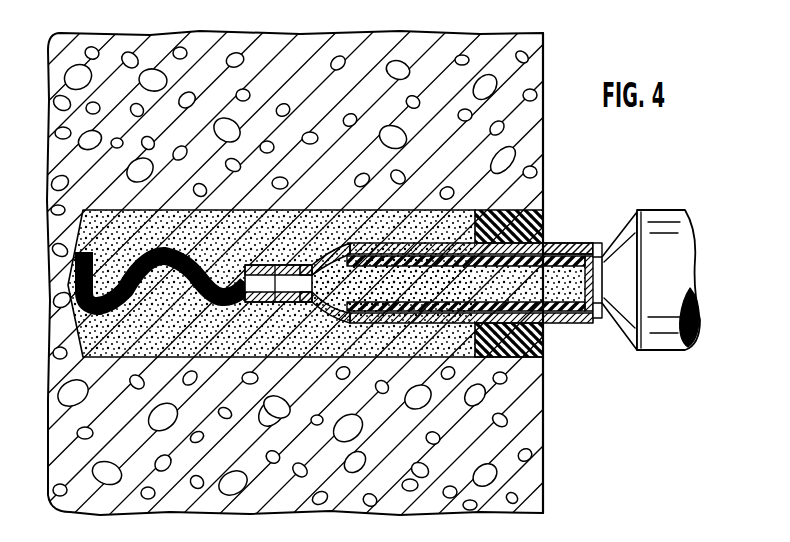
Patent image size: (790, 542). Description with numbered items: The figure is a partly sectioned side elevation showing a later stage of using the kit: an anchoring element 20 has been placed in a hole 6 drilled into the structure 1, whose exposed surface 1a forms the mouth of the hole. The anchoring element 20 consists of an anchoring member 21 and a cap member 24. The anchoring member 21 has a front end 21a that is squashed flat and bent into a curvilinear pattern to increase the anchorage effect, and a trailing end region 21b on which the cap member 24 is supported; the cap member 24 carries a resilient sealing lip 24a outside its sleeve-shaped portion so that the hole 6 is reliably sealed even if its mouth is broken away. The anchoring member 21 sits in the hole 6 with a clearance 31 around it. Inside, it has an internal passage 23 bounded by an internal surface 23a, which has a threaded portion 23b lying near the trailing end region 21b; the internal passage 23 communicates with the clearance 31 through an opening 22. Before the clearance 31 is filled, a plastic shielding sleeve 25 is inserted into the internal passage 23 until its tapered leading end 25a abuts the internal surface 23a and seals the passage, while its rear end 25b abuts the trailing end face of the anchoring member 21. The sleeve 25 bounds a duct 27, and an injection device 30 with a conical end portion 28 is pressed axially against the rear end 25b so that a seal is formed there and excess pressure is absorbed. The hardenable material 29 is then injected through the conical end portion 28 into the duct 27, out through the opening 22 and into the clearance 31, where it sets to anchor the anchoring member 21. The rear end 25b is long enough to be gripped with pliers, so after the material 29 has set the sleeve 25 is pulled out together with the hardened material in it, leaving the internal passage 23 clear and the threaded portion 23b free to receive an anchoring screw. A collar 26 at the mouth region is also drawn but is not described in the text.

The structure 1 is at (507, 33).
The exposed surface 1a is at (545, 44).
The hole 6 is at (85, 225).
The clearance 31 is at (160, 222).
The anchoring member 21 is at (385, 305).
The front end 21a is at (113, 316).
The trailing end region 21b is at (520, 358).
The opening 22 is at (258, 265).
The hardenable material 29 is at (340, 243).
The internal passage 23 is at (427, 324).
The internal surface 23a is at (422, 243).
The threaded portion 23b is at (572, 258).
The anchoring element 20 is at (448, 243).
The shielding sleeve 25 is at (450, 305).
The tapered leading end 25a is at (312, 330).
The rear end 25b is at (585, 325).
The duct 27 is at (402, 292).
The cap member 24 is at (523, 205).
The sealing lip 24a is at (533, 205).
The collar 26 is at (548, 253).
The conical end portion 28 is at (596, 277).
The injection device 30 is at (668, 340).